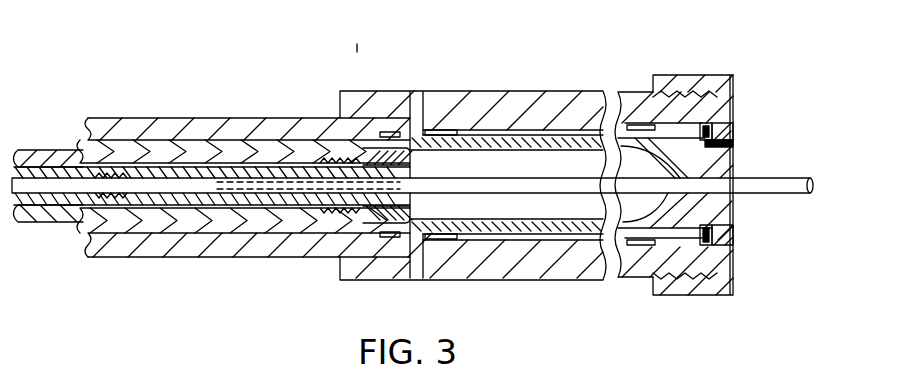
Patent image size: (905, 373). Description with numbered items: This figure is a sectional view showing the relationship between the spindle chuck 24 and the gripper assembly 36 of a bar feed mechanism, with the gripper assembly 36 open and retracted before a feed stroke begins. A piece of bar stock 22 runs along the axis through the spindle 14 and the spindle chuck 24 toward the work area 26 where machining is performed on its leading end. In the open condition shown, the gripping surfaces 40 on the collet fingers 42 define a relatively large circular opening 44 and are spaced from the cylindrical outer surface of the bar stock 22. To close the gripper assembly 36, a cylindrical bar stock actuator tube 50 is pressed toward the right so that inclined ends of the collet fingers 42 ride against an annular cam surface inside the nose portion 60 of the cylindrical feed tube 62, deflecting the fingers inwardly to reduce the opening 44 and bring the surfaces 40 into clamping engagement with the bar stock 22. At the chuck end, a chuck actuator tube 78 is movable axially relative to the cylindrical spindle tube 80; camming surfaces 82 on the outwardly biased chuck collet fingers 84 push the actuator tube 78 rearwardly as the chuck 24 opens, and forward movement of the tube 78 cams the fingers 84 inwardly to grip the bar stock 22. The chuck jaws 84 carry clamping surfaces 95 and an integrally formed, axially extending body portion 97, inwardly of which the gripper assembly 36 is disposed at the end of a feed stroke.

The spindle 14 is at (237, 114).
The bar stock 22 is at (50, 187).
The spindle chuck 24 is at (740, 75).
The work area 26 is at (820, 145).
The bar feed gripper assembly 36 is at (295, 144).
The gripping surfaces 40 is at (353, 178).
The collet fingers 42 is at (403, 163).
The circular opening 44 is at (422, 165).
The bar stock actuator tube 50 is at (22, 170).
The nose portion 60 is at (403, 213).
The feed tube 62 is at (72, 218).
The chuck actuator tube 78 is at (133, 146).
The spindle tube 80 is at (188, 128).
The camming surfaces 82 is at (703, 123).
The chuck collet fingers 84 is at (707, 160).
The clamping surfaces 95 is at (667, 170).
The body portion 97 is at (560, 147).